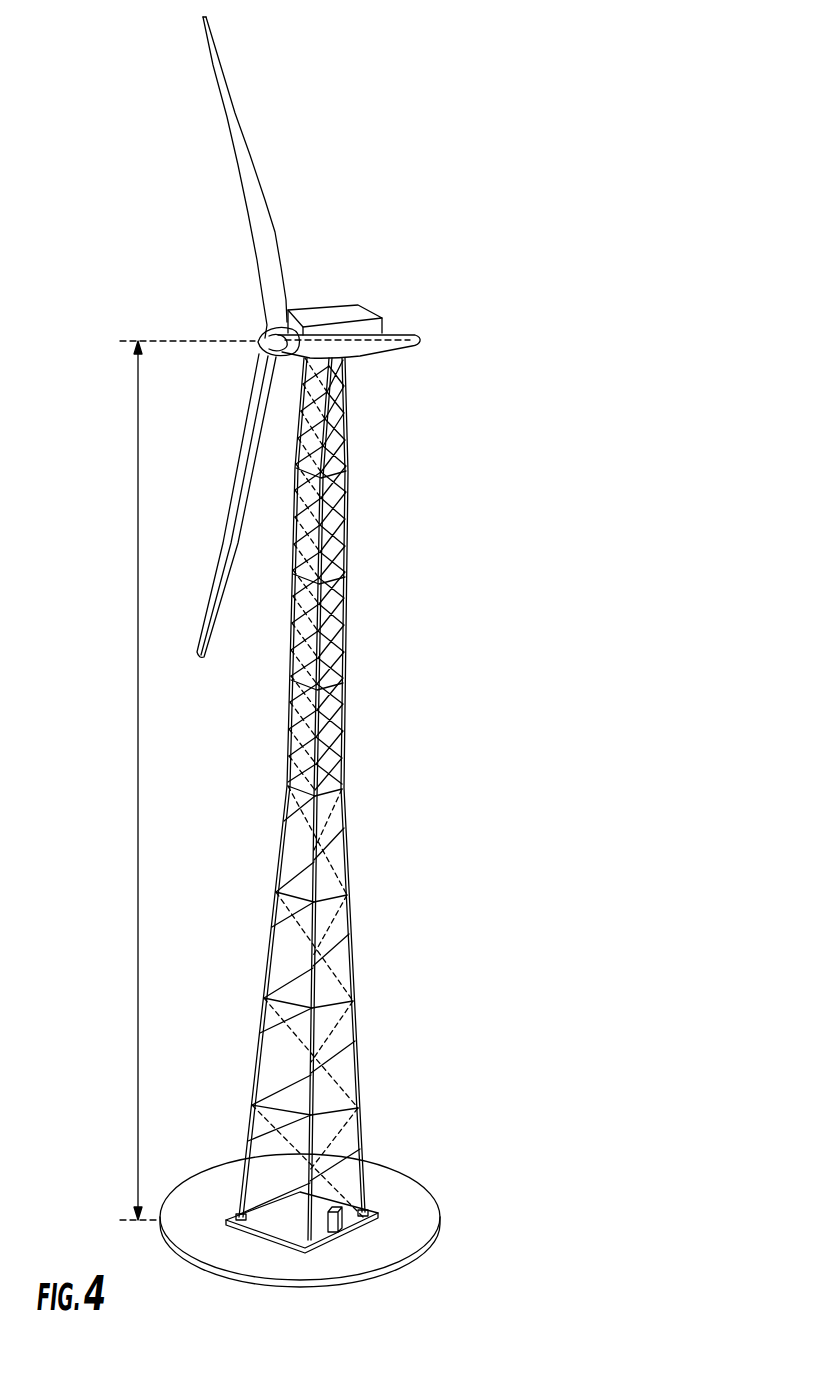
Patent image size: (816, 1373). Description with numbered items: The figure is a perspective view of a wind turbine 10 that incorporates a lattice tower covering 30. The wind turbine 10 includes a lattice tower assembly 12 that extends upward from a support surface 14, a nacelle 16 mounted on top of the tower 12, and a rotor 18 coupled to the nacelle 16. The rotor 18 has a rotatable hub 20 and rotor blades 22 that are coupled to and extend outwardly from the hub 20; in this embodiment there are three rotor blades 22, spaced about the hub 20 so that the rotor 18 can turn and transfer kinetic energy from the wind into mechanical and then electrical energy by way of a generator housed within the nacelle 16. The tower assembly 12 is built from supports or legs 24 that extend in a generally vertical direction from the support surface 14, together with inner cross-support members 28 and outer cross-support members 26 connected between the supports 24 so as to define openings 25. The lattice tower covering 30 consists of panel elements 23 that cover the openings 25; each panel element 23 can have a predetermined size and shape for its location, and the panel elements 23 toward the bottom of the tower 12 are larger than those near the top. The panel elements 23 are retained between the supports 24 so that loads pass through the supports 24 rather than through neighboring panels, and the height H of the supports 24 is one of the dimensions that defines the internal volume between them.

The wind turbine 10 is at (125, 301).
The lattice tower assembly 12 is at (348, 622).
The support surface 14 is at (418, 1228).
The nacelle 16 is at (358, 313).
The rotor 18 is at (257, 341).
The rotatable hub 20 is at (258, 352).
The rotor blade 22 is at (228, 115).
The panel element 23 is at (286, 1056).
The supports or legs 24 is at (345, 730).
The opening 25 is at (285, 968).
The outer cross-support member 26 is at (337, 980).
The inner cross-support member 28 is at (335, 918).
The lattice tower covering 30 is at (294, 866).
The height of the supports H is at (138, 712).